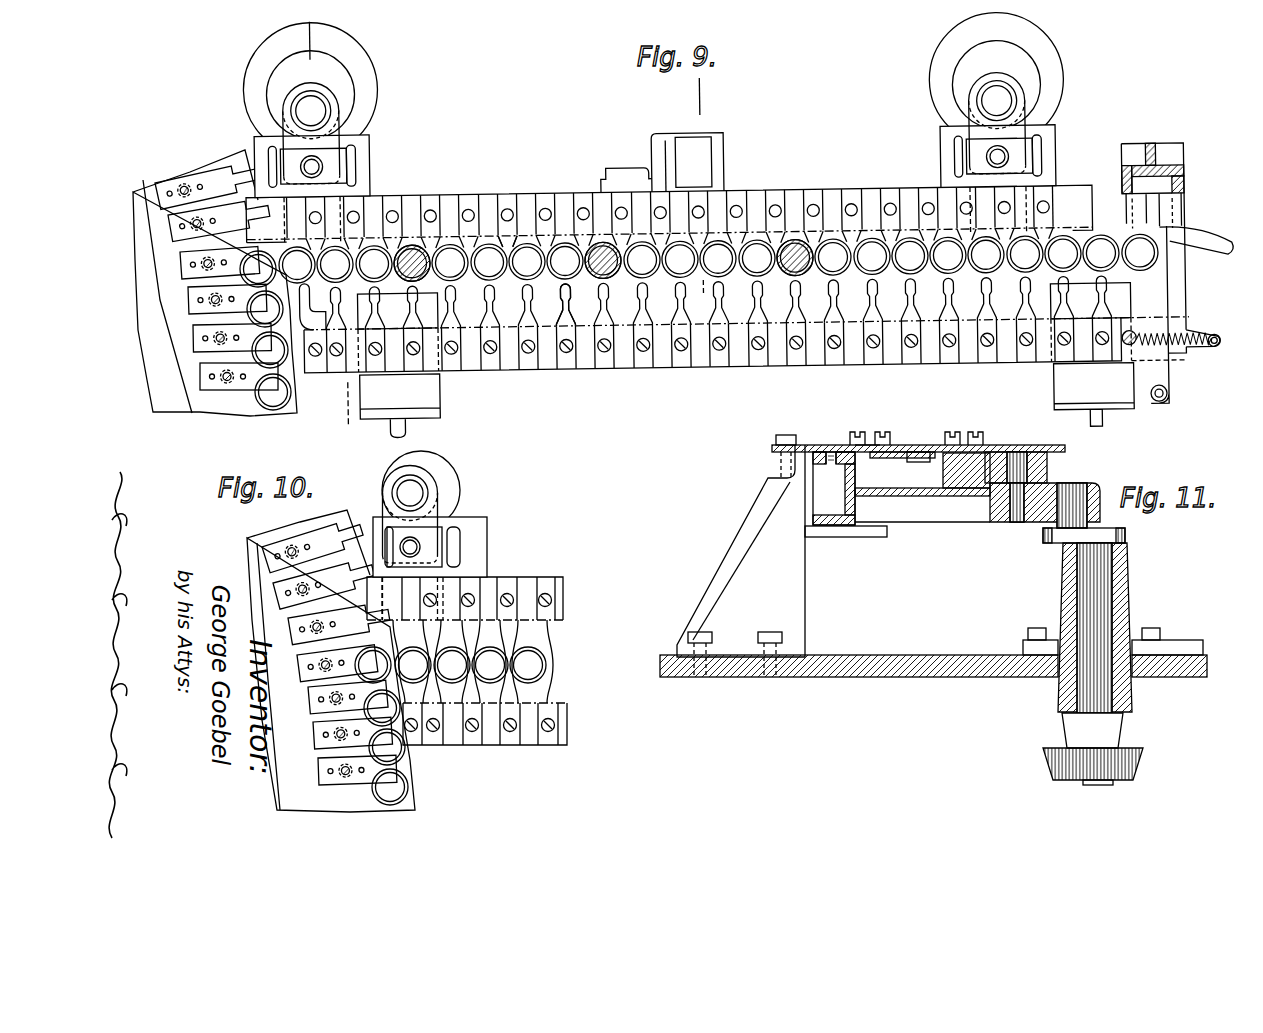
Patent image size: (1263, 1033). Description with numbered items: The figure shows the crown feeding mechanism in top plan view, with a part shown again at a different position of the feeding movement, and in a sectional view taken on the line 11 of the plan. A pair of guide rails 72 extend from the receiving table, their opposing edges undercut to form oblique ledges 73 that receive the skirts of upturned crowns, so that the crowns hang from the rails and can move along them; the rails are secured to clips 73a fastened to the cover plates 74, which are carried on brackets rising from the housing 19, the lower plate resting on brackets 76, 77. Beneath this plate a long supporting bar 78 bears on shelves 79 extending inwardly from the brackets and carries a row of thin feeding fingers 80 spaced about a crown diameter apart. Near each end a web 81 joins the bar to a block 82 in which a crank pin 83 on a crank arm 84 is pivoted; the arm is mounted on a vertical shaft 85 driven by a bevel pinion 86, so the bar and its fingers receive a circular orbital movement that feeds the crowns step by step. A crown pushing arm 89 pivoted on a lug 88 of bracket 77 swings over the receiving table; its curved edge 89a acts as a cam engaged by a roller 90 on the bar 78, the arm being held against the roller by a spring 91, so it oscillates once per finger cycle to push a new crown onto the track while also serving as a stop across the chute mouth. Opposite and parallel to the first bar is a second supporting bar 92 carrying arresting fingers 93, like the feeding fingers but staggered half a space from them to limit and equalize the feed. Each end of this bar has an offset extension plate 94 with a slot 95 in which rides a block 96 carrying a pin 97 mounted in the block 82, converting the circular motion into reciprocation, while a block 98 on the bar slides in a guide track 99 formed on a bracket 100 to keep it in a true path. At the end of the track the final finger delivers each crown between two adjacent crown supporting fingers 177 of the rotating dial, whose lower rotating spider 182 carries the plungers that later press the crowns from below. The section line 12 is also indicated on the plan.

In FIG. 9, the section line 11— 11 is at (333, 235).
In FIG. 9, the section line 12- 12 is at (712, 193).
In FIG. 11, the housing 19 is at (912, 677).
In FIG. 11, the guide rails 72 is at (912, 456).
In FIG. 11, the oblique ledges 73 is at (920, 441).
In FIG. 11, the clips 73a is at (890, 433).
In FIG. 11, the cover plates 74 is at (818, 437).
In FIG. 9, the bracket 76 is at (438, 398).
In FIG. 9, the bracket 77 is at (1094, 395).
In FIG. 11, the bracket 77 is at (741, 556).
In FIG. 9, the supporting bar 78 is at (747, 357).
In FIG. 10, the supporting bar 78 is at (568, 727).
In FIG. 11, the supporting bar 78 is at (834, 488).
In FIG. 9, the shelves 79 is at (744, 327).
In FIG. 11, the shelves 79 is at (860, 537).
In FIG. 9, the feeding fingers 80 is at (566, 316).
In FIG. 10, the feeding fingers 80 is at (550, 684).
In FIG. 11, the feeding fingers 80 is at (882, 453).
In FIG. 9, the web 81 is at (656, 301).
In FIG. 10, the web 81 is at (409, 638).
In FIG. 11, the web 81 is at (972, 497).
In FIG. 9, the block 82 is at (357, 95).
In FIG. 11, the block 82 is at (1028, 522).
In FIG. 9, the crank pin 83 is at (296, 106).
In FIG. 10, the crank pin 83 is at (395, 494).
In FIG. 11, the crank pin 83 is at (1065, 492).
In FIG. 11, the crank arm 84 is at (1055, 544).
In FIG. 9, the vertical shaft 85 is at (296, 74).
In FIG. 10, the vertical shaft 85 is at (450, 492).
In FIG. 11, the vertical shaft 85 is at (1115, 614).
In FIG. 11, the bevel pinion 86 is at (1140, 769).
In FIG. 9, the lug 88 is at (1155, 408).
In FIG. 9, the crown pushing arm 89 is at (1168, 314).
In FIG. 9, the curved cam edge 89a is at (1214, 242).
In FIG. 9, the roller 90 is at (1127, 351).
In FIG. 9, the spring 91 is at (1176, 357).
In FIG. 9, the second supporting bar 92 is at (794, 196).
In FIG. 10, the second supporting bar 92 is at (565, 592).
In FIG. 11, the second supporting bar 92 is at (966, 470).
In FIG. 9, the arresting fingers 93 is at (508, 276).
In FIG. 10, the arresting fingers 93 is at (550, 641).
In FIG. 9, the offset extension plate 94 is at (371, 142).
In FIG. 10, the offset extension plate 94 is at (488, 548).
In FIG. 9, the slot 95 is at (351, 173).
In FIG. 9, the block 96 is at (978, 154).
In FIG. 9, the pin 97 is at (324, 162).
In FIG. 10, the pin 97 is at (420, 547).
In FIG. 11, the pin 97 is at (1048, 463).
In FIG. 9, the block 98 is at (700, 161).
In FIG. 9, the guide track 99 is at (700, 140).
In FIG. 9, the bracket 100 is at (655, 165).
In FIG. 9, the crown supporting fingers 177 is at (250, 373).
In FIG. 9, the lower rotating spider 182 is at (186, 412).